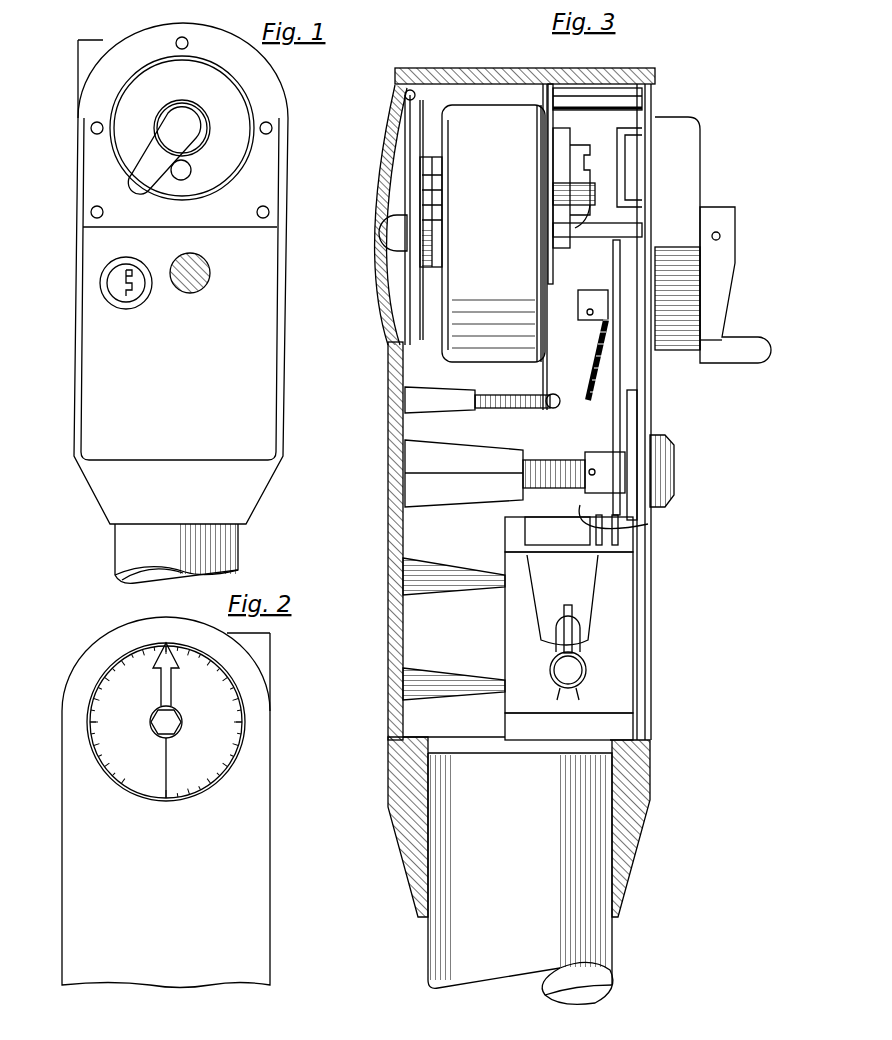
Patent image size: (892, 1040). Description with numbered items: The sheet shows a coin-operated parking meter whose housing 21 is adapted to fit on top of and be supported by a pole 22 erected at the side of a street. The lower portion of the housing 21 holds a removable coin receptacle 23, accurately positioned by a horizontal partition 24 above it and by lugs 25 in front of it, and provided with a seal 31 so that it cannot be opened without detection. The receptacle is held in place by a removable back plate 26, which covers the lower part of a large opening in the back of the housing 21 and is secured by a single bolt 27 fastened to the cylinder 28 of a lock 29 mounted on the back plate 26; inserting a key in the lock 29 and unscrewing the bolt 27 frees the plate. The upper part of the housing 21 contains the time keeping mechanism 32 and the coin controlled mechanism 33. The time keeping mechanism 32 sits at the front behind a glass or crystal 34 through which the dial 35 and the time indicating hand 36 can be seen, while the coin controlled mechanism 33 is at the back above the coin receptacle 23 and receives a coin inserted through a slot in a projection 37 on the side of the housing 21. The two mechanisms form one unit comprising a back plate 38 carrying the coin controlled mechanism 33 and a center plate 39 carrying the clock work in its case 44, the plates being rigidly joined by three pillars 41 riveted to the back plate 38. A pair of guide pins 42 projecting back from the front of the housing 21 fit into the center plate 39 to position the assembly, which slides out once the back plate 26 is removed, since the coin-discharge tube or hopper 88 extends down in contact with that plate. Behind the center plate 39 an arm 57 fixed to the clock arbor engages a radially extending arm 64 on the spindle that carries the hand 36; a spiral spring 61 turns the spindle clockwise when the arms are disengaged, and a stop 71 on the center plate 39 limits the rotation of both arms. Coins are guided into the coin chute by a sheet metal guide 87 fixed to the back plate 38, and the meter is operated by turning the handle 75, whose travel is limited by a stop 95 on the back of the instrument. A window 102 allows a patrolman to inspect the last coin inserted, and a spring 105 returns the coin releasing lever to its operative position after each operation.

In FIG. 1, the housing 21 is at (78, 376).
In FIG. 2, the housing 21 is at (88, 882).
In FIG. 3, the housing 21 is at (622, 890).
In FIG. 1, the pole 22 is at (130, 544).
In FIG. 3, the pole 22 is at (598, 944).
In FIG. 3, the coin receptacle 23 is at (618, 626).
In FIG. 3, the horizontal partition 24 is at (620, 522).
In FIG. 3, the lugs 25 is at (436, 680).
In FIG. 1, the back plate 26 is at (255, 394).
In FIG. 3, the back plate 26 is at (636, 724).
In FIG. 3, the bolt 27 is at (574, 470).
In FIG. 3, the cylinder 28 is at (608, 468).
In FIG. 1, the lock 29 is at (118, 285).
In FIG. 3, the lock 29 is at (660, 468).
In FIG. 3, the seal 31 is at (572, 672).
In FIG. 3, the time keeping mechanism 32 is at (466, 152).
In FIG. 3, the coin controlled mechanism 33 is at (697, 146).
In FIG. 3, the glass or crystal 34 is at (382, 282).
In FIG. 2, the dial 35 is at (132, 732).
In FIG. 3, the dial 35 is at (406, 296).
In FIG. 2, the time indicating hand 36 is at (166, 692).
In FIG. 3, the time indicating hand 36 is at (404, 170).
In FIG. 1, the projection 37 is at (92, 58).
In FIG. 2, the projection 37 is at (262, 662).
In FIG. 1, the back plate 38 is at (262, 93).
In FIG. 3, the back plate 38 is at (650, 86).
In FIG. 3, the center plate 39 is at (549, 380).
In FIG. 3, the pillars 41 is at (600, 98).
In FIG. 3, the guide pins 42 is at (523, 405).
In FIG. 3, the clock work case 44 is at (493, 233).
In FIG. 3, the arm 57 is at (560, 140).
In FIG. 3, the spiral spring 61 is at (430, 192).
In FIG. 3, the arm 64 is at (588, 176).
In FIG. 3, the stop 71 is at (596, 193).
In FIG. 1, the handle 75 is at (138, 183).
In FIG. 3, the handle 75 is at (722, 355).
In FIG. 3, the sheet metal guide 87 is at (632, 140).
In FIG. 3, the coin-discharge tube 88 is at (622, 420).
In FIG. 1, the stop 95 is at (175, 200).
In FIG. 1, the window 102 is at (170, 260).
In FIG. 3, the spring 105 is at (598, 390).